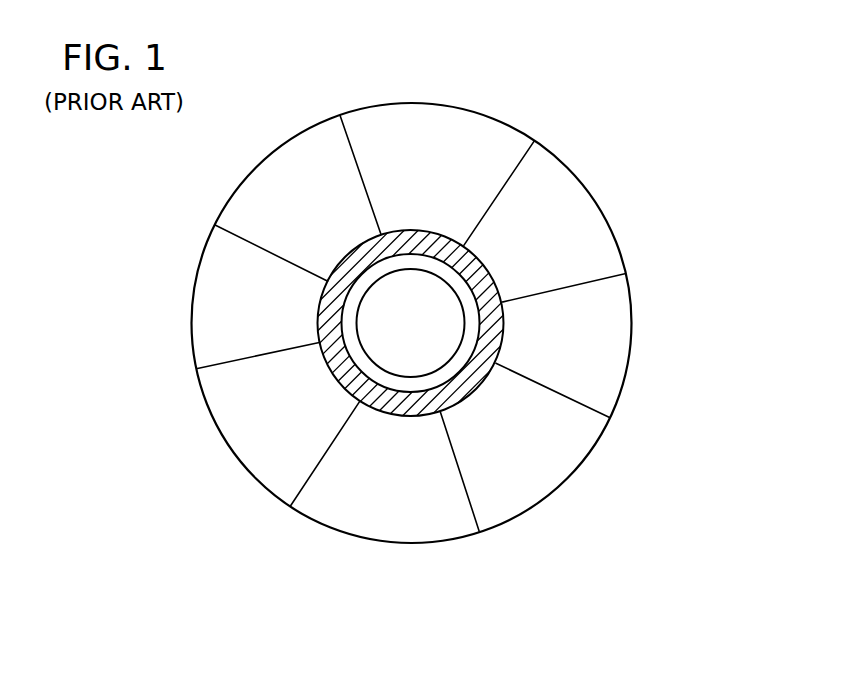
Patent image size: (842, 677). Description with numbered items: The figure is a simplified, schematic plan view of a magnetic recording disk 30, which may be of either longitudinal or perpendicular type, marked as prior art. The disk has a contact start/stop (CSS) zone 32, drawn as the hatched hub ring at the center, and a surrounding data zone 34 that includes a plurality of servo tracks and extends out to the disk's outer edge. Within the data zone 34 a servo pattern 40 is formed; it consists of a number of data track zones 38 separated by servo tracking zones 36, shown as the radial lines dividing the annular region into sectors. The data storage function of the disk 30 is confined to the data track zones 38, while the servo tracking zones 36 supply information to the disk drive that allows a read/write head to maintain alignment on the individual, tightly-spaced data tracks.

The magnetic recording disk 30 is at (615, 146).
The contact start/stop (CSS) zone 32 is at (503, 336).
The data zone 34 is at (546, 437).
The servo tracking zones 36 is at (363, 181).
The data track zones 38 is at (337, 153).
The servo pattern 40 is at (257, 310).